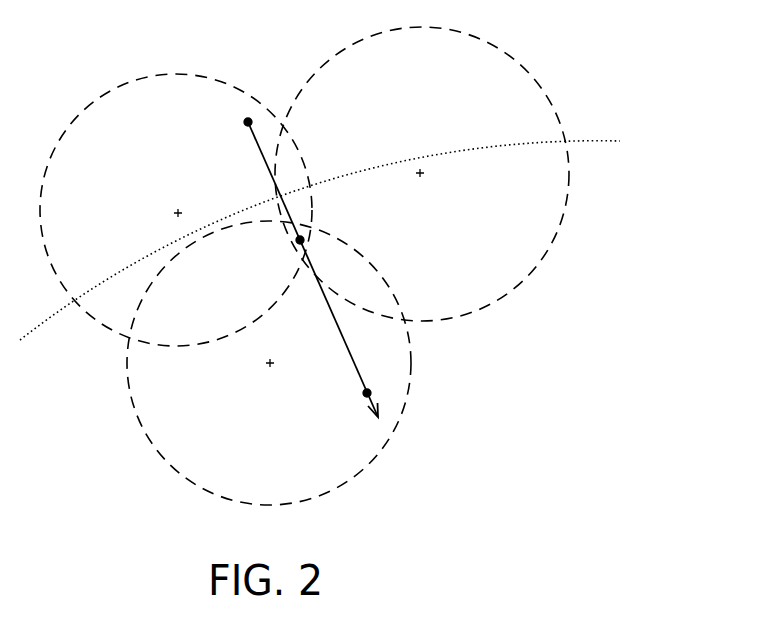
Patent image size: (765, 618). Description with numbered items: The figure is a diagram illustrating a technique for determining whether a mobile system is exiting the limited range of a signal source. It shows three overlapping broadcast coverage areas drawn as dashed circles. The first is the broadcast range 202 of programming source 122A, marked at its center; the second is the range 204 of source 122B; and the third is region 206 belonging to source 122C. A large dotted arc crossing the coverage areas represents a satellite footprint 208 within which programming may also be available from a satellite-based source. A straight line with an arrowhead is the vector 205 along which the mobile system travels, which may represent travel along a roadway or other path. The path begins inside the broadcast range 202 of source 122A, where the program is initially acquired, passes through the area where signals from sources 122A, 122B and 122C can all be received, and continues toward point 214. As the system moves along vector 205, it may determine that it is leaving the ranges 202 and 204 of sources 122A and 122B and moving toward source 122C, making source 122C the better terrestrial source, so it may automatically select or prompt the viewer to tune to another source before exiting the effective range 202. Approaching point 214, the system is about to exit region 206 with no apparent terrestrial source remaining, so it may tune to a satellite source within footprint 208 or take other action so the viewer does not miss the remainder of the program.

The broadcast range 202 is at (97, 101).
The range 204 is at (469, 36).
The region 206 is at (133, 405).
The satellite footprint 208 is at (383, 167).
The vector 205 is at (340, 345).
The point 214 is at (246, 124).
The programming source 122A is at (175, 212).
The source 122B is at (426, 172).
The source 122C is at (267, 366).